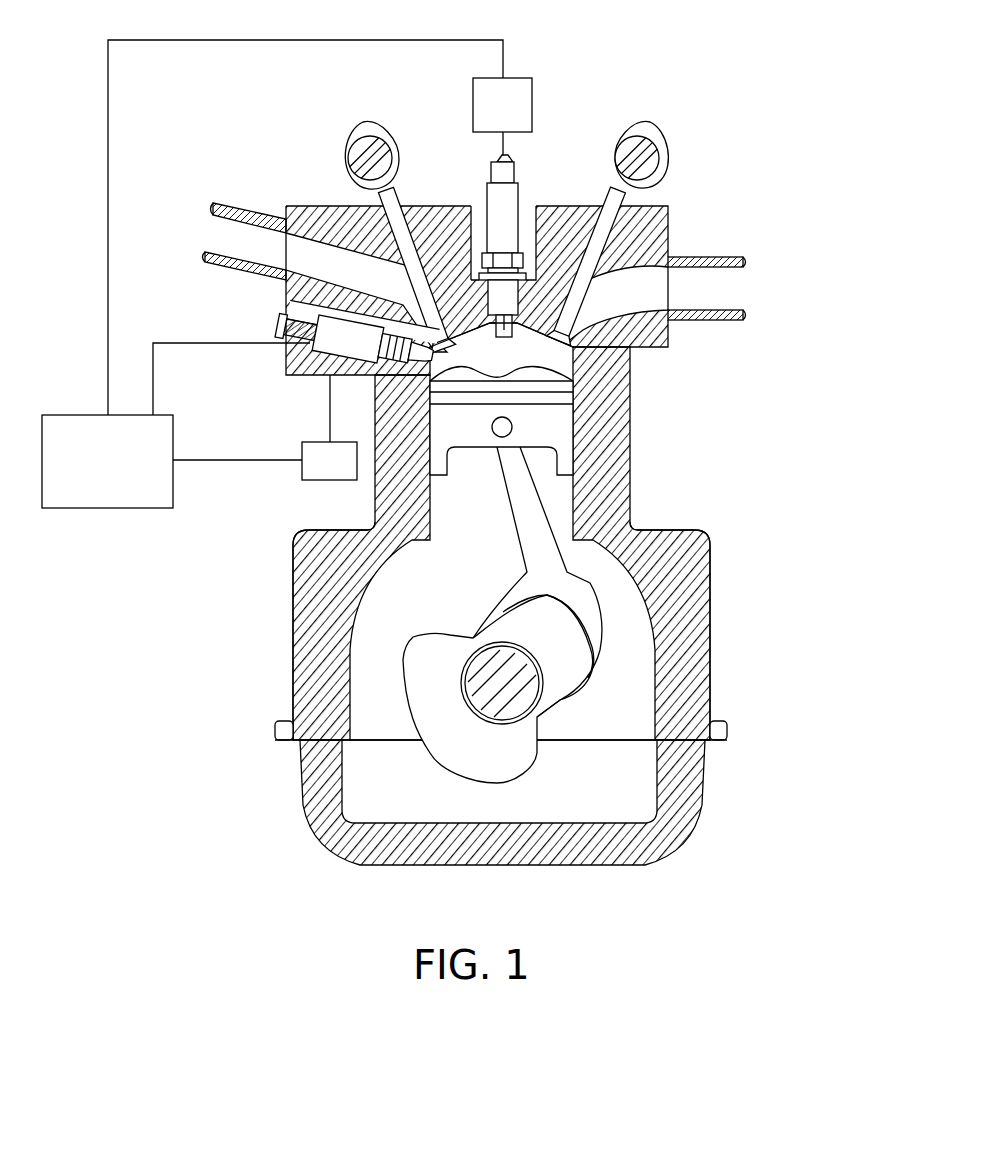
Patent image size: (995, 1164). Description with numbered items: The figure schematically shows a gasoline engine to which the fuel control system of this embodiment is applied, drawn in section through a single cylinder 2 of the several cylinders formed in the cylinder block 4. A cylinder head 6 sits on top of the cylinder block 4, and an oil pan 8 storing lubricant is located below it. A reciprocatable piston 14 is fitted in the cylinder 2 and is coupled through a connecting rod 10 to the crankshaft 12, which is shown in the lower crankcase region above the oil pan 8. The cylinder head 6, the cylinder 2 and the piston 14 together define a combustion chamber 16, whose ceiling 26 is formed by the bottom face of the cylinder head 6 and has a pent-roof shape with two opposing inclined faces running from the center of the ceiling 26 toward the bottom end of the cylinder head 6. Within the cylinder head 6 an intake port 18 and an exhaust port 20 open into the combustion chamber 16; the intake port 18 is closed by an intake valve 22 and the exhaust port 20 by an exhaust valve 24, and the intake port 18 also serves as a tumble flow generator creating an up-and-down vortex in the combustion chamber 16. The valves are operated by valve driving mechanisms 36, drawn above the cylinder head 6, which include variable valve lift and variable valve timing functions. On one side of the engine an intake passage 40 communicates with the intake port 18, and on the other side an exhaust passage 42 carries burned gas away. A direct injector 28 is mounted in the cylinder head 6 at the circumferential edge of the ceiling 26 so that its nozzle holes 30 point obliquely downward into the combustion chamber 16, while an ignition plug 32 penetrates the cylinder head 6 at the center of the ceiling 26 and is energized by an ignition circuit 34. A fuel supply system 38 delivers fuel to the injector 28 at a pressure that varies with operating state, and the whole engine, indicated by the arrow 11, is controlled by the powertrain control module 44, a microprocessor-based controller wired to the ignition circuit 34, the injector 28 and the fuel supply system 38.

The cylinder 2 is at (632, 478).
The cylinder block 4 is at (712, 612).
The cylinder head 6 is at (668, 212).
The oil pan 8 is at (712, 785).
The connecting rod 10 is at (530, 522).
The internal combustion engine 11 is at (578, 524).
The crankshaft 12 is at (545, 670).
The piston 14 is at (575, 390).
The combustion chamber 16 is at (517, 371).
The intake port 18 is at (392, 288).
The exhaust port 20 is at (651, 308).
The intake valve 22 is at (400, 196).
The exhaust valve 24 is at (607, 205).
The ceiling 26 is at (562, 352).
The injector 28 is at (300, 305).
The nozzle hole 30 is at (430, 377).
The ignition plug 32 is at (488, 195).
The ignition circuit 34 is at (524, 78).
The valve driving mechanism 36 is at (363, 127).
The fuel supply system 38 is at (305, 480).
The intake passage 40 is at (238, 203).
The exhaust passage 42 is at (722, 320).
The powertrain control module 44 is at (108, 508).